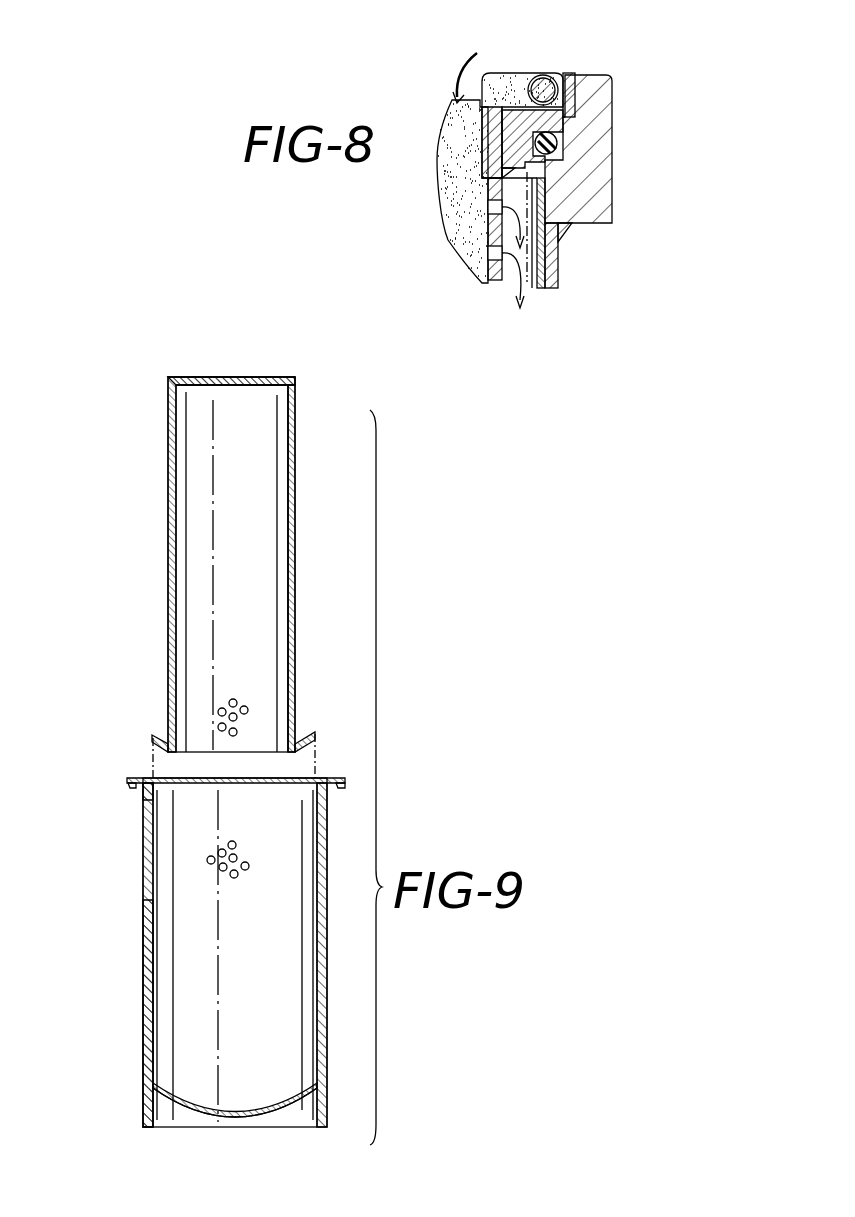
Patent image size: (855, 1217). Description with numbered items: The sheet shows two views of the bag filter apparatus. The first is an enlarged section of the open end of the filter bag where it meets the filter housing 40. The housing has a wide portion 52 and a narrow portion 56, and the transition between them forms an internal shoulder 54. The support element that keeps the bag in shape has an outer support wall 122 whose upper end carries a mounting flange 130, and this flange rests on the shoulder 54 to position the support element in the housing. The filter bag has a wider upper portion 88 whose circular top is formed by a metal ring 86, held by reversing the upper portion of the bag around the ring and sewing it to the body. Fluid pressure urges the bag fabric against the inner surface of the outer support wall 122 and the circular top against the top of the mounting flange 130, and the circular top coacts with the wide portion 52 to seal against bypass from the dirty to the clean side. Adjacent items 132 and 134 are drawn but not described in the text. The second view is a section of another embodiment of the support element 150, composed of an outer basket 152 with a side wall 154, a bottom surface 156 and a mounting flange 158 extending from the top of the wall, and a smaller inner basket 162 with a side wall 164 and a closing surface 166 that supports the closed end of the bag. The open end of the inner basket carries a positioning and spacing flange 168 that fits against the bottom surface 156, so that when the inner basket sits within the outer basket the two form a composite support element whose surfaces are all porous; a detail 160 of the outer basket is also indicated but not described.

In FIG. 8, the filter housing 40 is at (560, 266).
In FIG. 8, the wide portion 52 is at (566, 80).
In FIG. 8, the shoulder 54 is at (560, 192).
In FIG. 8, the narrow portion 56 is at (539, 288).
In FIG. 8, the metal ring 86 is at (544, 75).
In FIG. 8, the upper portion 88 is at (446, 155).
In FIG. 8, the outer support wall 122 is at (500, 280).
In FIG. 8, the mounting flange 130 is at (574, 97).
In FIG. 8, the ring 132 is at (560, 118).
In FIG. 8, the seal 134 is at (556, 148).
In FIG. 9, the support element 150 is at (122, 397).
In FIG. 9, the outer basket 152 is at (190, 957).
In FIG. 9, the side wall 154 is at (143, 1013).
In FIG. 9, the bottom surface 156 is at (222, 1120).
In FIG. 9, the mounting flange 158 is at (128, 780).
In FIG. 9, the lip 160 is at (132, 790).
In FIG. 9, the inner basket 162 is at (208, 543).
In FIG. 9, the side wall 164 is at (288, 586).
In FIG. 9, the closing surface 166 is at (233, 377).
In FIG. 9, the positioning and spacing flange 168 is at (157, 742).